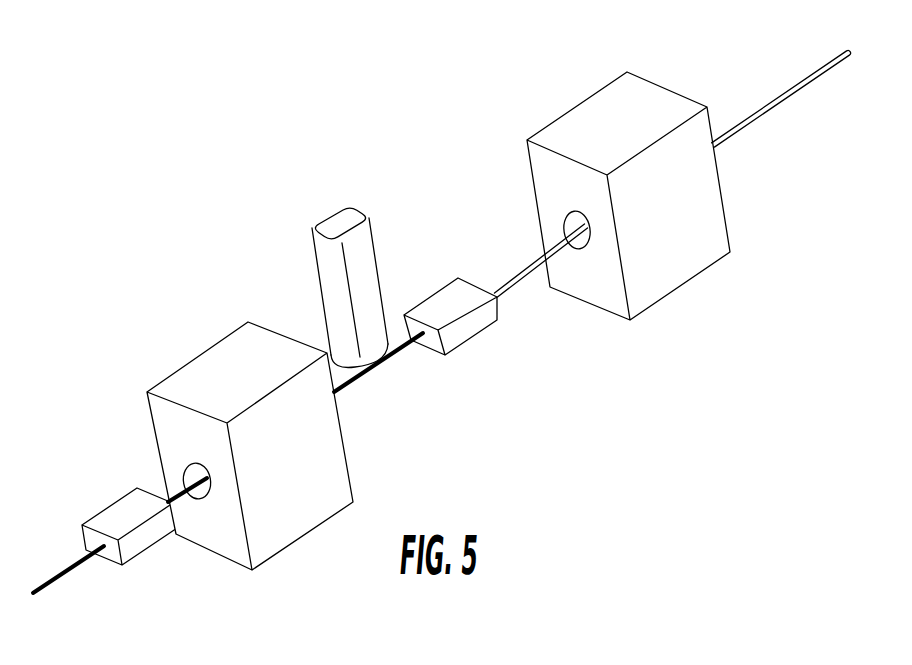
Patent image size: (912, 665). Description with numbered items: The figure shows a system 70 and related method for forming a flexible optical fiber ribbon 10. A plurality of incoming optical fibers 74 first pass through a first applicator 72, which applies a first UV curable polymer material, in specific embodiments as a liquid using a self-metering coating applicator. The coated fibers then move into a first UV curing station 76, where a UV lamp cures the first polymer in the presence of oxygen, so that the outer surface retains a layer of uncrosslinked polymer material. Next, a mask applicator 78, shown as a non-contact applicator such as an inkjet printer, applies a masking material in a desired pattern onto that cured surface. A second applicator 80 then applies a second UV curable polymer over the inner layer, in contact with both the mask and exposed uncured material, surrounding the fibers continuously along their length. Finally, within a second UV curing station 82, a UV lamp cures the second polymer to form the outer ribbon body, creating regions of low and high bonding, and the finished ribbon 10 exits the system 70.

The ribbon 10 is at (825, 65).
The system 70 is at (533, 418).
The first applicator 72 is at (137, 548).
The incoming optical fibers 74 is at (37, 593).
The first UV curing station 76 is at (218, 377).
The mask applicator 78 is at (338, 224).
The second applicator 80 is at (447, 303).
The second UV curing station 82 is at (600, 117).